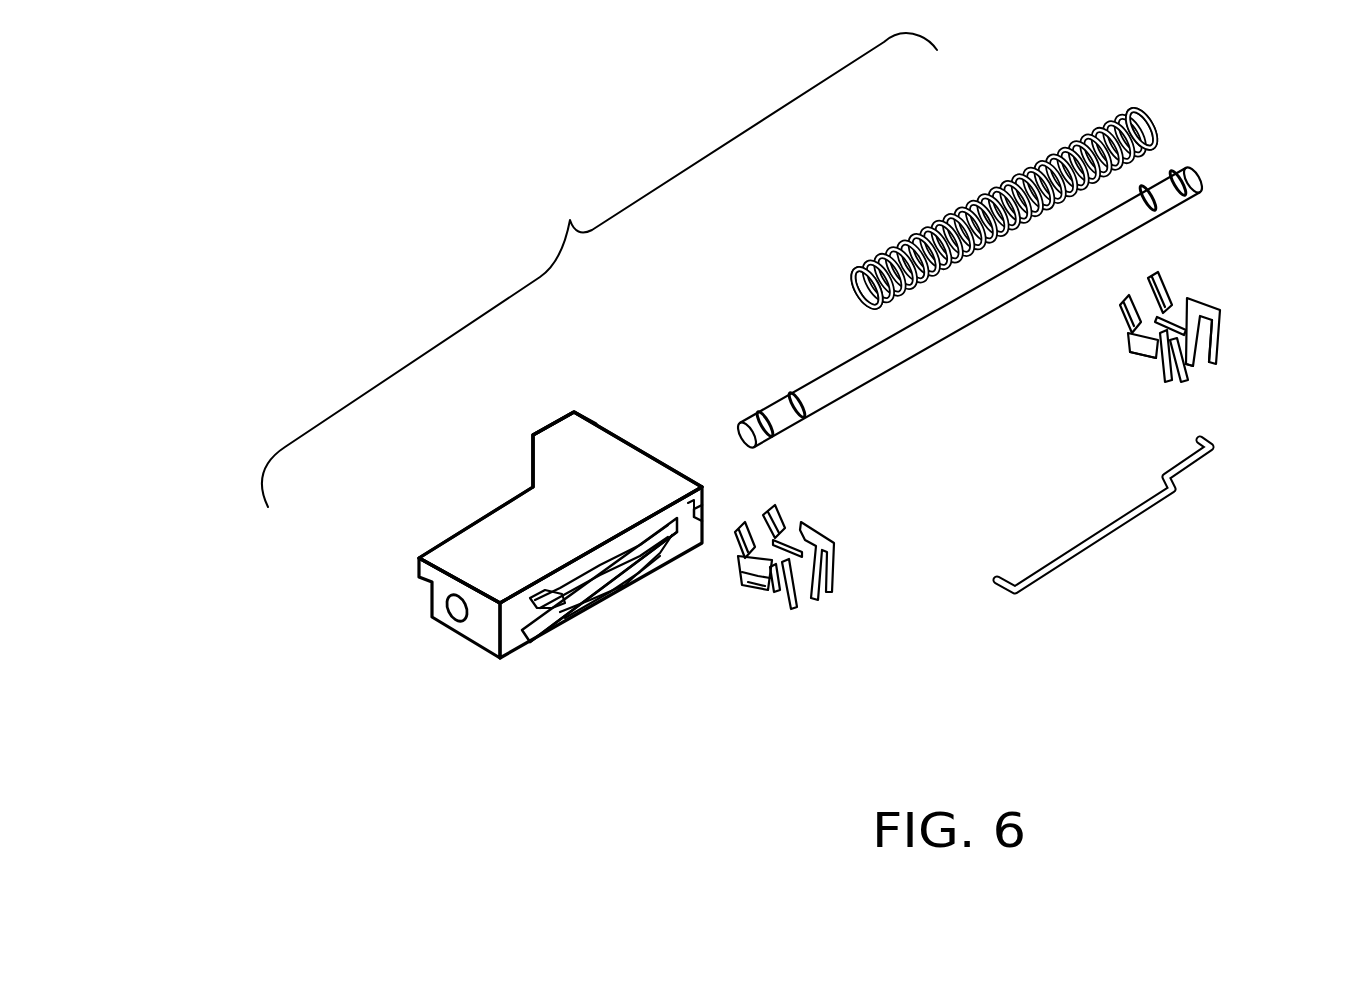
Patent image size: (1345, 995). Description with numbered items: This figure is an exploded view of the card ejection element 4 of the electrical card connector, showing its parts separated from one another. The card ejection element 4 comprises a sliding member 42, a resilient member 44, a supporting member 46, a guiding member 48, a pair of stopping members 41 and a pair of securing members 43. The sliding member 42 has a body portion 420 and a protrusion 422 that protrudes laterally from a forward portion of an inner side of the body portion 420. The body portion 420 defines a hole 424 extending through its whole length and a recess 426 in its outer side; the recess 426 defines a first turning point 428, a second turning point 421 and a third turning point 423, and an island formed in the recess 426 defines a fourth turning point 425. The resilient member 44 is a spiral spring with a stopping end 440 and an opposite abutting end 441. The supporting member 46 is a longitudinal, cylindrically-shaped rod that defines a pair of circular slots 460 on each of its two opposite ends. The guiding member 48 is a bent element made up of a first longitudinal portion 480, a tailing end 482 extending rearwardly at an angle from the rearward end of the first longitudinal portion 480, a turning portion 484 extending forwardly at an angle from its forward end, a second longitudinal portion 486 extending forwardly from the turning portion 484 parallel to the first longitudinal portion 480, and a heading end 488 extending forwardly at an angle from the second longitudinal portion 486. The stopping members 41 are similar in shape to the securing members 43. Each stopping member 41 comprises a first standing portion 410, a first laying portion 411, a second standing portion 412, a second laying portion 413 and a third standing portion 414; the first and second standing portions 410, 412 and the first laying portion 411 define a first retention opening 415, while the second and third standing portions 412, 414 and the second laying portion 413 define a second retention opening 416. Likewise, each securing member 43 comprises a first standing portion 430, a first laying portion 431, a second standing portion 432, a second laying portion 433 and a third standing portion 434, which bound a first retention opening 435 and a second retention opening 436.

The card ejection element 4 is at (599, 270).
The sliding member 42 is at (598, 475).
The body portion 420 is at (637, 490).
The protrusion 422 is at (553, 445).
The hole 424 is at (455, 610).
The second turning point 421 is at (536, 640).
The third turning point 423 is at (543, 643).
The fourth turning point 425 is at (575, 607).
The recess 426 is at (628, 585).
The first turning point 428 is at (665, 540).
The securing member 43 is at (740, 528).
The stopping member 41 is at (768, 515).
The first standing portion 430 is at (740, 560).
The first laying portion 431 is at (760, 585).
The second standing portion 432 is at (770, 590).
The third standing portion 434 is at (830, 590).
The first retention opening 435 is at (745, 575).
The second retention opening 436 is at (790, 595).
The resilient member 44 is at (1152, 116).
The stopping end 440 is at (1162, 143).
The abutting end 441 is at (846, 300).
The supporting member 46 is at (903, 360).
The circular slot 460 is at (812, 422).
The first standing portion 410 is at (1120, 318).
The first laying portion 411 is at (1130, 360).
The second standing portion 412 is at (1150, 365).
The second laying portion 413 is at (1195, 360).
The third standing portion 414 is at (1185, 375).
The first retention opening 415 is at (1130, 345).
The second retention opening 416 is at (1167, 372).
The second laying portion 433 is at (1205, 312).
The guiding member 48 is at (1170, 508).
The first longitudinal portion 480 is at (1105, 543).
The tailing end 482 is at (997, 592).
The turning portion 484 is at (1178, 483).
The second longitudinal portion 486 is at (1185, 460).
The heading end 488 is at (1210, 441).